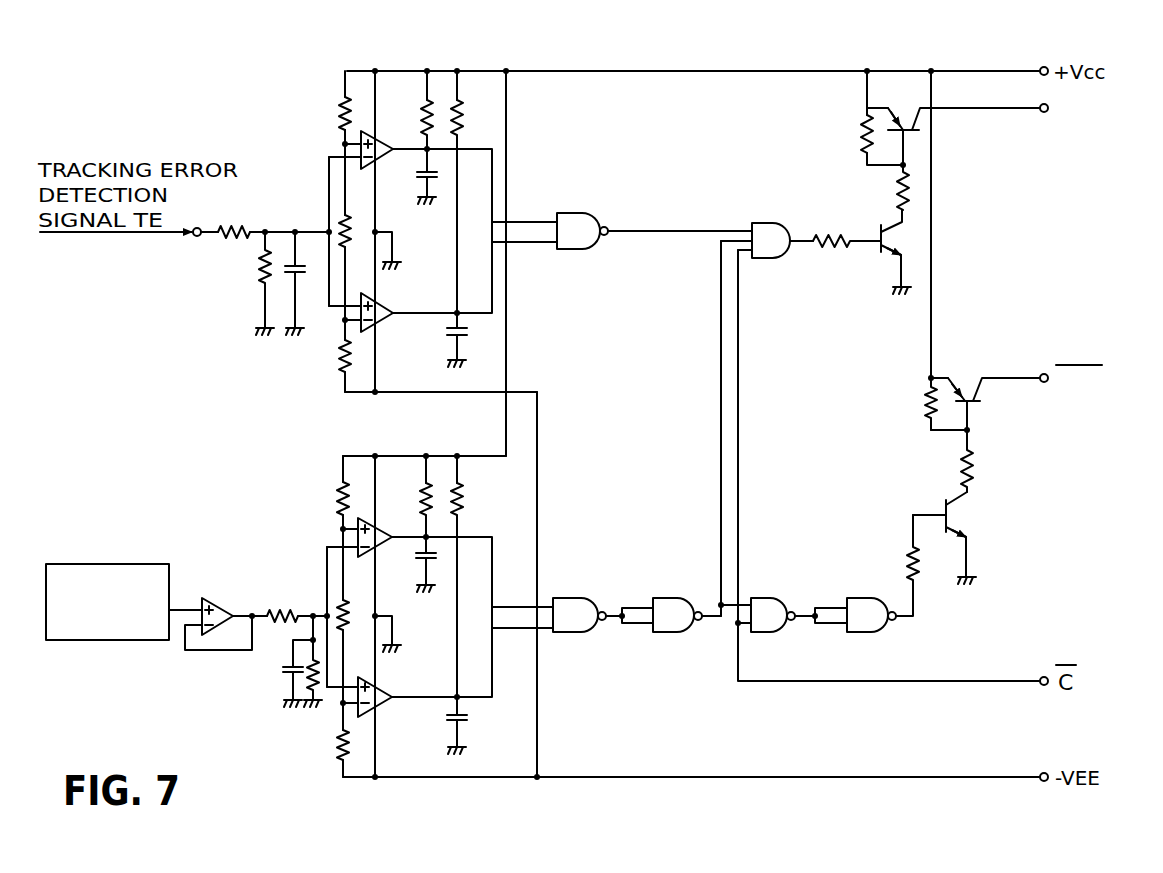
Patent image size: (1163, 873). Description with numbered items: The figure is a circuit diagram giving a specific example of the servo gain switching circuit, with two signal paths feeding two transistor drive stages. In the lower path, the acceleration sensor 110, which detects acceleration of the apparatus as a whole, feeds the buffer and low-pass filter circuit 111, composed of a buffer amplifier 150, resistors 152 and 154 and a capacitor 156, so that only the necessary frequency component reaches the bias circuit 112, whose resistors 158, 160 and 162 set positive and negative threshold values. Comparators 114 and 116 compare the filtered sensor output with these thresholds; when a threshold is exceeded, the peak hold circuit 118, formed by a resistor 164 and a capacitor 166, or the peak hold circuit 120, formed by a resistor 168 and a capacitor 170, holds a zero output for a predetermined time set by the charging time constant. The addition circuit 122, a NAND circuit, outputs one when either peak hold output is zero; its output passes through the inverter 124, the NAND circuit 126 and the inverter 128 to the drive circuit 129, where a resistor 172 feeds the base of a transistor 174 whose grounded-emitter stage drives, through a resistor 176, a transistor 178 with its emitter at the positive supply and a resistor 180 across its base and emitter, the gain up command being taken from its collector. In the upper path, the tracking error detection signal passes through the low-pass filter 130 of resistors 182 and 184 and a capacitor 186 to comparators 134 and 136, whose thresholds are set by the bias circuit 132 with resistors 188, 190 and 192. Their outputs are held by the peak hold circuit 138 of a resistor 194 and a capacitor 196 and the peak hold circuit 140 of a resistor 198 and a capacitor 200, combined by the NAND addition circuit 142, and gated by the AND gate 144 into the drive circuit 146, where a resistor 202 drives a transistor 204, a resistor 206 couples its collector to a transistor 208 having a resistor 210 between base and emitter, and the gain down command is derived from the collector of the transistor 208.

The acceleration sensor 110 is at (118, 644).
The buffer and low-pass filter circuit 111 is at (239, 674).
The bias circuit 112 is at (326, 766).
The comparator 114 is at (384, 550).
The comparator 116 is at (386, 708).
The peak hold circuit 118 is at (418, 509).
The peak hold circuit 120 is at (441, 742).
The addition circuit 122 is at (573, 640).
The inverter 124 is at (670, 640).
The NAND circuit 126 is at (770, 595).
The inverter 128 is at (870, 594).
The drive circuit 129 is at (909, 440).
The low-pass filter 130 is at (277, 213).
The bias circuit 132 is at (326, 358).
The comparator 134 is at (384, 163).
The comparator 136 is at (384, 328).
The peak hold circuit 138 is at (413, 86).
The peak hold circuit 140 is at (447, 343).
The addition circuit 142 is at (582, 208).
The AND gate 144 is at (771, 262).
The drive circuit 146 is at (821, 132).
The buffer amplifier 150 is at (222, 597).
The resistor 152 is at (283, 609).
The resistor 154 is at (303, 692).
The capacitor 156 is at (282, 680).
The resistor 158 is at (337, 506).
The resistor 160 is at (337, 596).
The resistor 162 is at (356, 756).
The resistor 164 is at (436, 484).
The capacitor 166 is at (437, 565).
The resistor 168 is at (462, 500).
The capacitor 170 is at (467, 724).
The resistor 172 is at (920, 575).
The transistor 174 is at (940, 505).
The resistor 176 is at (975, 472).
The transistor 178 is at (980, 405).
The resistor 180 is at (925, 400).
The resistor 182 is at (222, 244).
The resistor 184 is at (256, 272).
The capacitor 186 is at (287, 276).
The resistor 188 is at (340, 111).
The resistor 190 is at (340, 224).
The resistor 192 is at (348, 378).
The resistor 194 is at (423, 131).
The capacitor 196 is at (440, 179).
The resistor 198 is at (461, 131).
The capacitor 200 is at (468, 337).
The resistor 202 is at (836, 254).
The transistor 204 is at (880, 262).
The resistor 206 is at (888, 193).
The transistor 208 is at (914, 138).
The resistor 210 is at (860, 146).